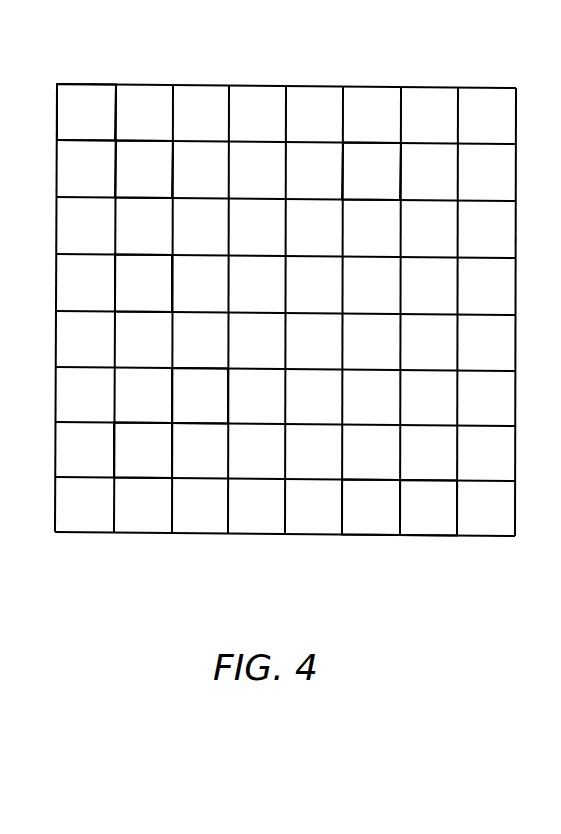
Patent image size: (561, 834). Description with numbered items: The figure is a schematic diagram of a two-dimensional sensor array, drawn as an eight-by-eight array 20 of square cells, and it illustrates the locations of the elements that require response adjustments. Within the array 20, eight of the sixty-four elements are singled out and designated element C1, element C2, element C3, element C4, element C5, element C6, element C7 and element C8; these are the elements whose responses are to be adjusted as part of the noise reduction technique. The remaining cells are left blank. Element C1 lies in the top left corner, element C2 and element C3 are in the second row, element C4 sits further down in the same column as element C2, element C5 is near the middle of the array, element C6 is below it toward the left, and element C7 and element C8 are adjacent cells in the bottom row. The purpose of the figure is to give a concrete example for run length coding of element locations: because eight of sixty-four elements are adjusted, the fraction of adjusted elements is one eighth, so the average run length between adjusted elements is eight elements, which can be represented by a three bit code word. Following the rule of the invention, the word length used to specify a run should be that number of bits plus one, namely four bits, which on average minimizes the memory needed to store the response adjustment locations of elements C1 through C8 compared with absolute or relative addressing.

The 8×8 array 20 is at (395, 86).
The element C1 is at (86, 112).
The element C2 is at (144, 170).
The element C3 is at (371, 172).
The element C4 is at (143, 284).
The element C5 is at (200, 396).
The element C6 is at (143, 451).
The element C7 is at (371, 508).
The element C8 is at (428, 508).